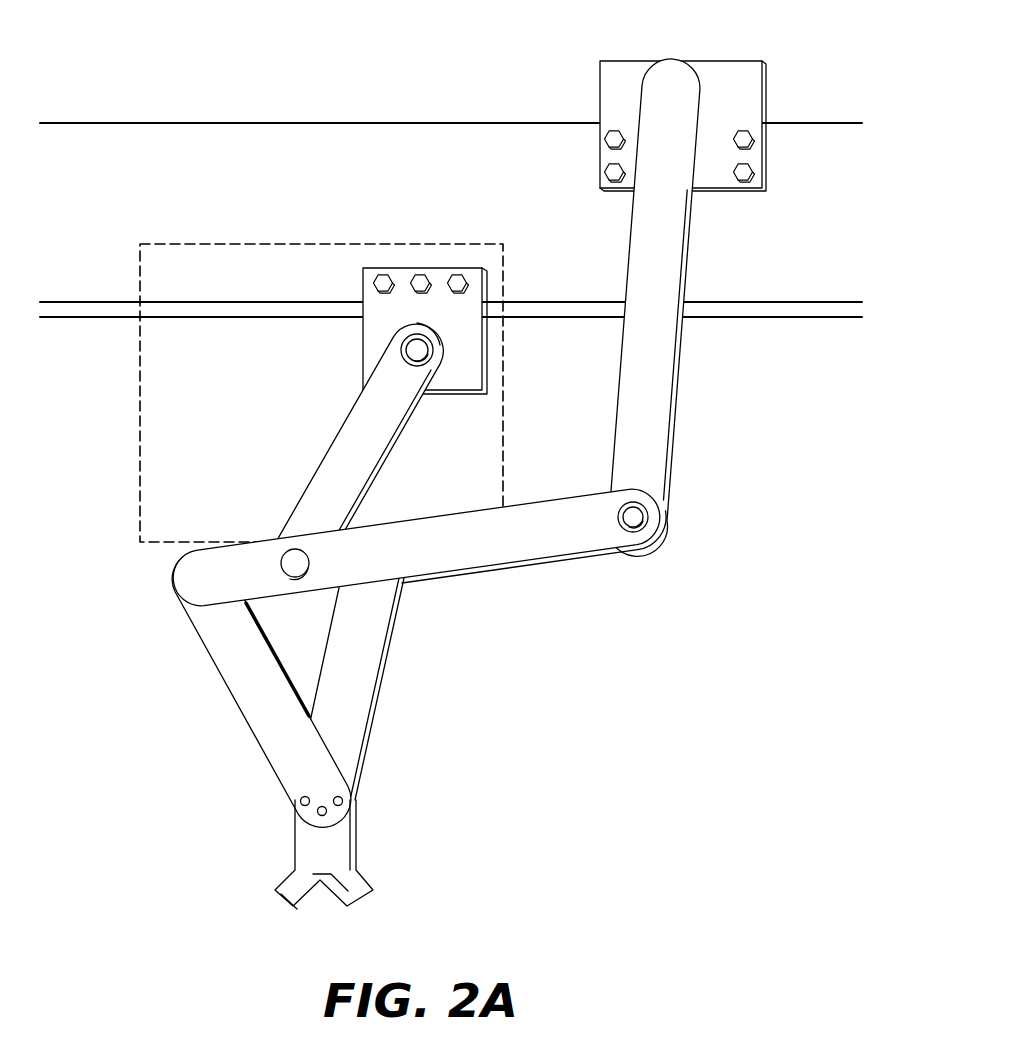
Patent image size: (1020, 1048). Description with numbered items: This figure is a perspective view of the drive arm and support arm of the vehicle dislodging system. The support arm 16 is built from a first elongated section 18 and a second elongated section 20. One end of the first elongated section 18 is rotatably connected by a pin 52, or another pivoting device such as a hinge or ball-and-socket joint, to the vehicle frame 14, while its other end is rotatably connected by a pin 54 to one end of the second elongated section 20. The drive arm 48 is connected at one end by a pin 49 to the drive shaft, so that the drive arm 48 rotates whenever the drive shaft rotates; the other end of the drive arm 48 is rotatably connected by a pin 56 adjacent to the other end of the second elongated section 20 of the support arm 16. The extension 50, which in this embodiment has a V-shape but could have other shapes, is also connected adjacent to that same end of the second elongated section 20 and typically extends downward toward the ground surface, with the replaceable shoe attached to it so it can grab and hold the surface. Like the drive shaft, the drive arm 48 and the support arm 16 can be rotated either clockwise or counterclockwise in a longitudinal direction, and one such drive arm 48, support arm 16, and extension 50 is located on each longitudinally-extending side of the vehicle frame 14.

The vehicle frame 14 is at (243, 155).
The pin 52 is at (670, 90).
The pin 49 is at (360, 428).
The drive arm 48 is at (350, 456).
The pin 56 is at (295, 563).
The first elongated section 18 is at (655, 392).
The support arm 16 is at (466, 484).
The pin 54 is at (633, 517).
The second elongated section 20 is at (531, 542).
The extension 50 is at (350, 676).